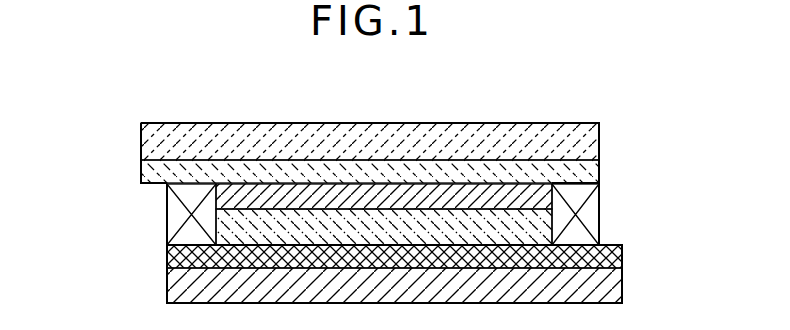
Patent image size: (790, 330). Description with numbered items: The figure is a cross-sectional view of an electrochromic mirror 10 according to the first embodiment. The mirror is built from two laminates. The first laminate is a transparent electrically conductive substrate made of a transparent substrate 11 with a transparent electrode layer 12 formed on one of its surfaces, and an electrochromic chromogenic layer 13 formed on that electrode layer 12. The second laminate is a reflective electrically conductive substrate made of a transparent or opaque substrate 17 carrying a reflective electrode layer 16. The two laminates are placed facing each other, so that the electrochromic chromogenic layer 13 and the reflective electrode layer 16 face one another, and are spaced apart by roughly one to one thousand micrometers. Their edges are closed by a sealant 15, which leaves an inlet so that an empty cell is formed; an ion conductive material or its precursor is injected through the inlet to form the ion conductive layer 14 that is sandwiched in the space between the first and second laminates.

The electrochromic mirror 10 is at (572, 98).
The transparent substrate 11 is at (593, 141).
The transparent electrode layer 12 is at (590, 170).
The electrochromic chromogenic layer 13 is at (533, 195).
The ion conductive layer 14 is at (535, 225).
The sealant 15 is at (178, 214).
The reflective electrode layer 16 is at (612, 254).
The substrate 17 is at (607, 288).